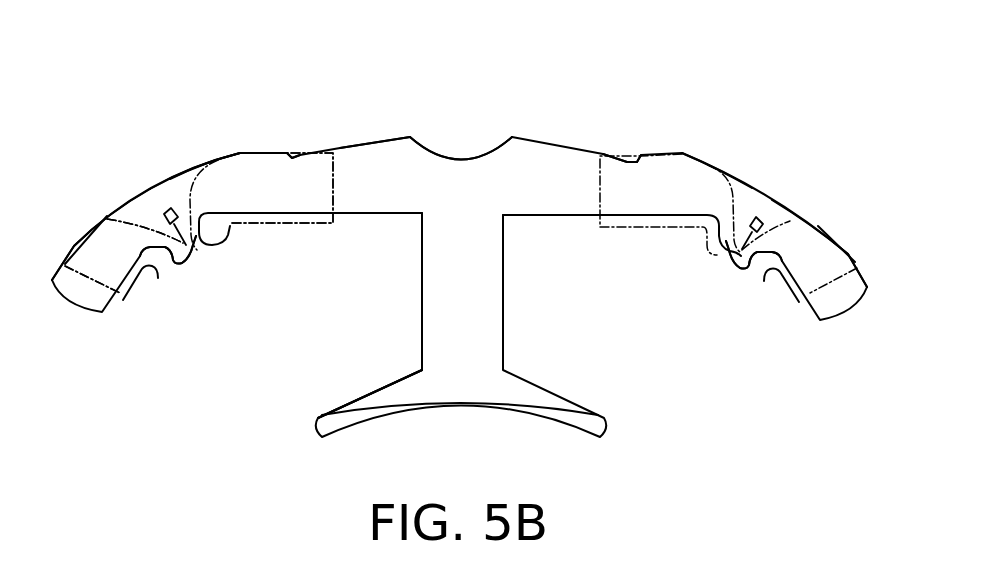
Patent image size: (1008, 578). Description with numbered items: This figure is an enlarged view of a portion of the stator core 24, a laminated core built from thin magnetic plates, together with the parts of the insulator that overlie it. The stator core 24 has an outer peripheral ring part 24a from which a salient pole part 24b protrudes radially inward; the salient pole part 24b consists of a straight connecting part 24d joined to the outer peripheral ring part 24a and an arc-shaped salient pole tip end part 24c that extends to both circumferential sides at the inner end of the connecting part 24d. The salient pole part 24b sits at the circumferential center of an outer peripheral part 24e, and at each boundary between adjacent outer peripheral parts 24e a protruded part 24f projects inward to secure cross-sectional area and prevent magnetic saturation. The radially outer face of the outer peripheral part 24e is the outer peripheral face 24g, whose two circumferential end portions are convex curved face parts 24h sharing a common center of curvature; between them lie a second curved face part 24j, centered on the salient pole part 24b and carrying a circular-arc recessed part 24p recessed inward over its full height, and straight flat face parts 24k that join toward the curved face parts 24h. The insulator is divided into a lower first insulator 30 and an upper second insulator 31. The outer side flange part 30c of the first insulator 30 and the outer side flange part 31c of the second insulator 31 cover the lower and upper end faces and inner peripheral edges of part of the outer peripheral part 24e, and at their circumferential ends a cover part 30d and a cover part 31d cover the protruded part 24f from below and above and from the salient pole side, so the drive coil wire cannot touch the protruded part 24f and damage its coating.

The stator core 24 is at (172, 180).
The outer peripheral ring part 24a is at (172, 180).
The salient pole part 24b is at (322, 322).
The salient pole tip end part 24c is at (382, 386).
The connecting part 24d is at (419, 346).
The outer peripheral part 24e is at (107, 218).
The protruded part 24f is at (195, 245).
The outer peripheral face 24g is at (751, 217).
The curved face part 24h is at (178, 176).
The second curved face part 24j is at (386, 135).
The flat face part 24k is at (273, 151).
The recessed part 24p is at (460, 157).
The first insulator 30 is at (322, 150).
The second insulator 31 is at (322, 150).
The outer side flange part 30c is at (130, 215).
The outer side flange part 31c is at (130, 215).
The cover part 30d is at (215, 248).
The cover part 31d is at (157, 277).